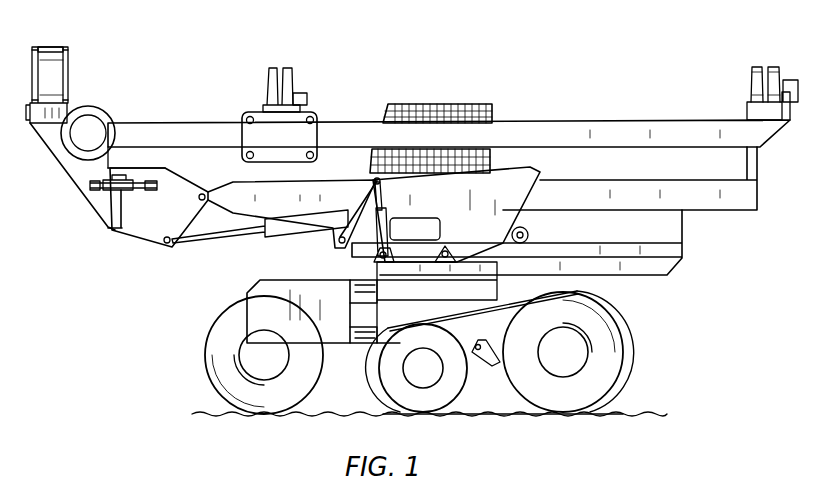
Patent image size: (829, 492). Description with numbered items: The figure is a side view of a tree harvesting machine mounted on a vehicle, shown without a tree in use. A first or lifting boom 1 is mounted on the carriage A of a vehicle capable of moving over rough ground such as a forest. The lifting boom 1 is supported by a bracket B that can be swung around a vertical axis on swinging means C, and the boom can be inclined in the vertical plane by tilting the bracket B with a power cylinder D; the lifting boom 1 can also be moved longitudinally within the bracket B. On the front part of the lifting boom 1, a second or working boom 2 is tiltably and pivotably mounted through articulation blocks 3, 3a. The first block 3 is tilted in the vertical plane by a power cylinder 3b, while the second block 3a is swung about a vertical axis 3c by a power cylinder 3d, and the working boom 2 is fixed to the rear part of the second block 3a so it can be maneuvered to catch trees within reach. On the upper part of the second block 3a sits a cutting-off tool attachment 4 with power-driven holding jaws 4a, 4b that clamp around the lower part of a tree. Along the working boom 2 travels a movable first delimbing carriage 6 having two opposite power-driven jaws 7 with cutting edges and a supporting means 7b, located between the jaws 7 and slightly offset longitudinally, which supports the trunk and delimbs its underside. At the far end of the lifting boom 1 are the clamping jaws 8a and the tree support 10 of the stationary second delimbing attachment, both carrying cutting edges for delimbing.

The lifting boom 1 is at (240, 192).
The working boom 2 is at (593, 119).
The first articulation block 3 is at (140, 230).
The second articulation block 3a is at (62, 167).
The power cylinder 3b is at (277, 237).
The vertical axis 3c is at (107, 230).
The power cylinder 3d is at (127, 177).
The cutting-off tool attachment 4 is at (84, 81).
The holding jaw 4a is at (67, 58).
The holding jaw 4b is at (48, 48).
The first delimbing tool attachment 6 is at (262, 123).
The power-driven jaws 7 is at (268, 87).
The supporting means 7b is at (308, 97).
The clamping jaws 8a is at (768, 70).
The tree support 10 is at (795, 80).
The carriage A is at (313, 290).
The bracket B is at (488, 232).
The swinging means C is at (445, 258).
The power cylinder D is at (360, 185).